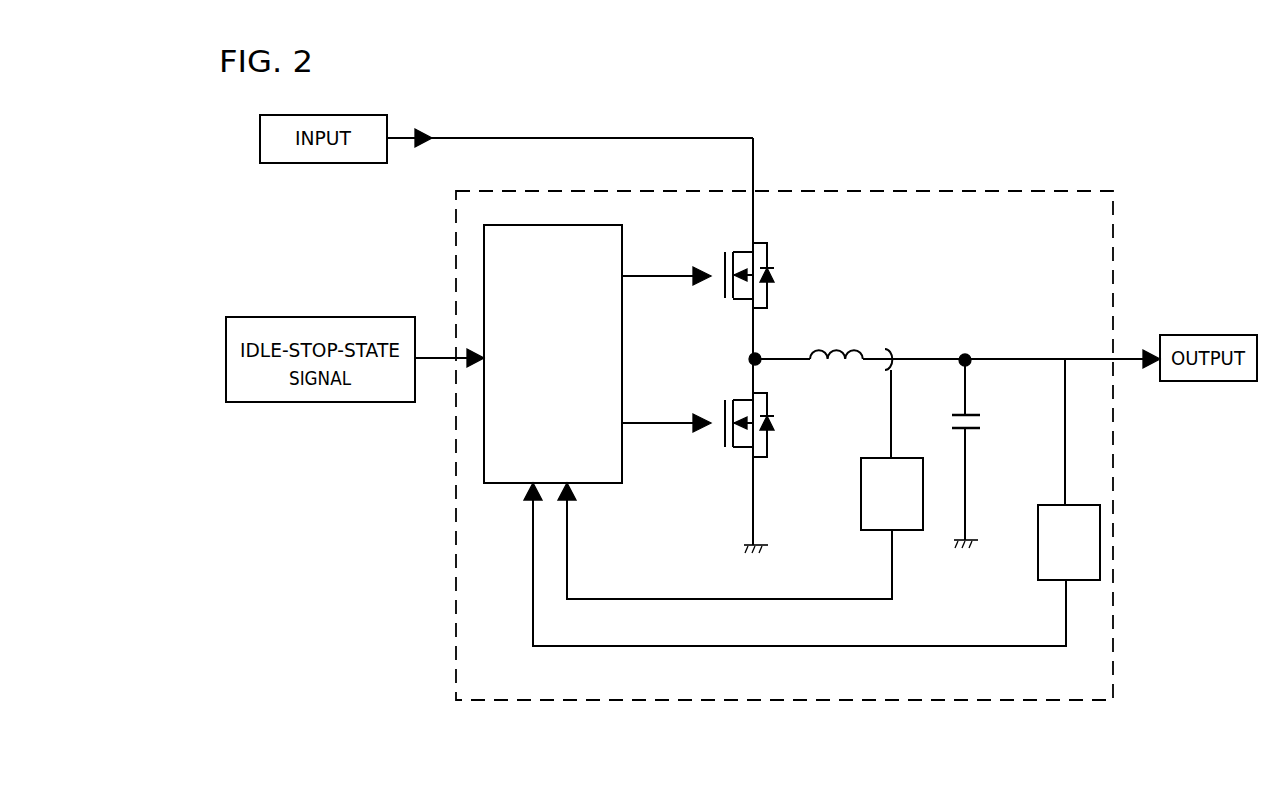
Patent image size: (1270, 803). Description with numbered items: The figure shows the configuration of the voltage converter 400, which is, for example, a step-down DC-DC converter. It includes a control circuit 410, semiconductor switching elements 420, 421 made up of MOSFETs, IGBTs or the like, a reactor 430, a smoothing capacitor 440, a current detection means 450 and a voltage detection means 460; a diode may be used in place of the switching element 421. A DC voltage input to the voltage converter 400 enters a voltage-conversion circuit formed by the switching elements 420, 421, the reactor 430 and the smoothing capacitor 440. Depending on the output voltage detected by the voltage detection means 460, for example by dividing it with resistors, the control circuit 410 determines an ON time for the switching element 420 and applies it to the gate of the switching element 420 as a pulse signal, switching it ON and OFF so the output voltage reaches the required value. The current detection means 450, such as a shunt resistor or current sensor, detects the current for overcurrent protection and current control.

The voltage converter 400 is at (457, 548).
The control circuit 410 is at (512, 485).
The semiconductor switching element 420 is at (773, 271).
The semiconductor switching element 421 is at (783, 428).
The reactor 430 is at (833, 345).
The smoothing capacitor 440 is at (985, 418).
The current detection means 450 is at (892, 450).
The voltage detection means 460 is at (1069, 469).